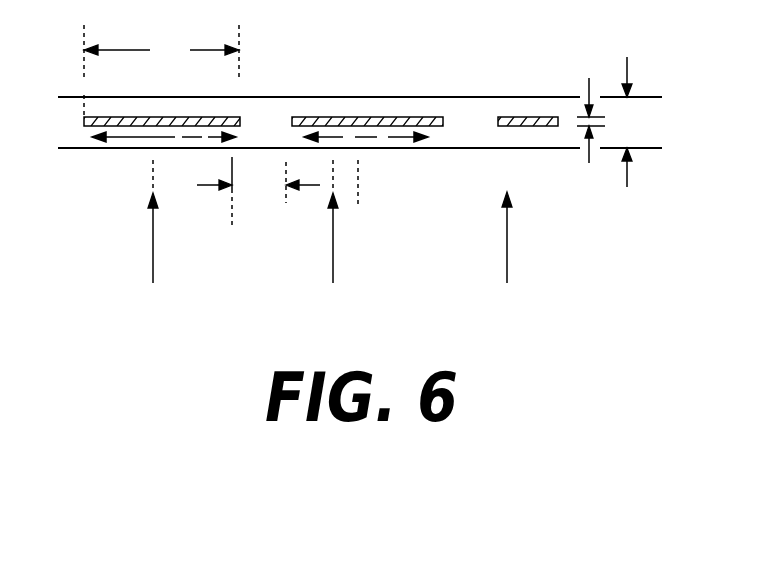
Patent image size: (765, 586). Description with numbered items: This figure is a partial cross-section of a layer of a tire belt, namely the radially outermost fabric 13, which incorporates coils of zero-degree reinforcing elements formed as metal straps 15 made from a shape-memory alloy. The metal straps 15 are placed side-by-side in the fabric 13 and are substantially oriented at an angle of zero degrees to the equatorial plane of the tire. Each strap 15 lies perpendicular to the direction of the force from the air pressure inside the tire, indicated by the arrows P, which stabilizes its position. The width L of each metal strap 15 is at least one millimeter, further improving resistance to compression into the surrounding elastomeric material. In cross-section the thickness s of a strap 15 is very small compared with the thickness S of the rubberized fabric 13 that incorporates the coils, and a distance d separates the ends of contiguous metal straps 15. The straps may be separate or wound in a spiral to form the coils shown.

The radially outermost fabric 13 is at (463, 132).
The metal straps 15 is at (499, 117).
The width of strap L is at (161, 71).
The distance between ends of contiguous metal straps d is at (277, 192).
The thickness of the rubberized fabric S is at (628, 122).
The thickness of metal strap s is at (578, 117).
The pressure P is at (343, 221).